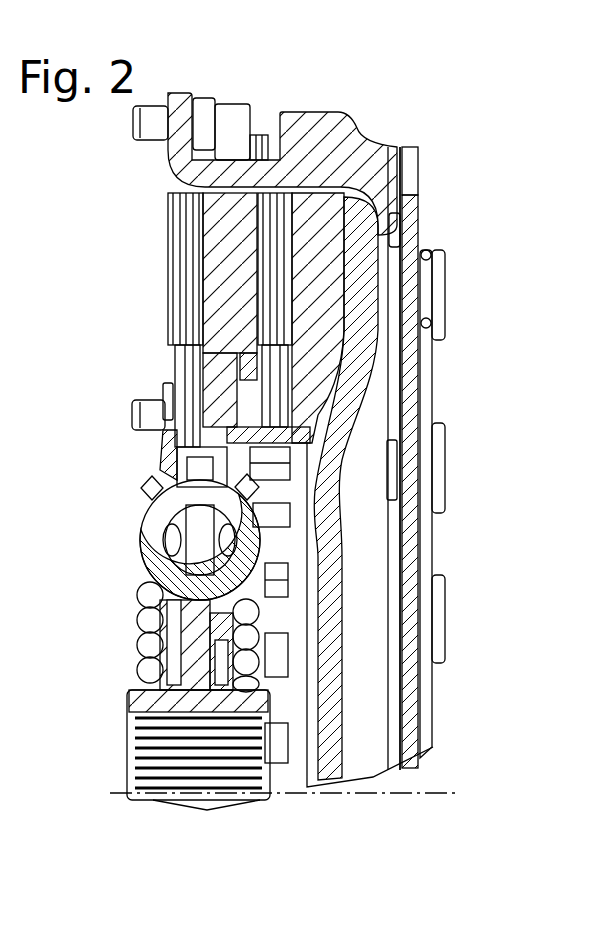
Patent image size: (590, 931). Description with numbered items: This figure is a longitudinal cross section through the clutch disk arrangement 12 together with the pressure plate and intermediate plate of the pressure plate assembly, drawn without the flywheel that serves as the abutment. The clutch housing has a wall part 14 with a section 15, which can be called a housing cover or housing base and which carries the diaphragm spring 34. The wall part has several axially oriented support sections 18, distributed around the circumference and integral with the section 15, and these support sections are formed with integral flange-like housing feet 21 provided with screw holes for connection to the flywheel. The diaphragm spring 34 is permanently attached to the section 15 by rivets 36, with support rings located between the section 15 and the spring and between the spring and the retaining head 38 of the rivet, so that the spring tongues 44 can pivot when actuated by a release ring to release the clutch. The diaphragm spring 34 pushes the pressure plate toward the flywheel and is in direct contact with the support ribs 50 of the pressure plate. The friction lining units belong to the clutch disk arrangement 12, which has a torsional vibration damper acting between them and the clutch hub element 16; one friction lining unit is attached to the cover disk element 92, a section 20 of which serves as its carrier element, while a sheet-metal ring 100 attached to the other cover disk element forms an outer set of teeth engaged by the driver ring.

The clutch disk arrangement 12 is at (143, 295).
The wall part 14 is at (323, 183).
The section 15 is at (380, 227).
The clutch hub element 16 is at (131, 690).
The support section 18 is at (294, 135).
The section of the cover plate 20 is at (167, 453).
The housing foot 21 is at (183, 138).
The diaphragm spring 34 is at (410, 350).
The rivet 36 is at (428, 283).
The retaining head 38 is at (445, 305).
The spring tongue 44 is at (423, 510).
The support rib 50 is at (390, 163).
The cover disk element 92 is at (150, 485).
The sheet-metal ring 100 is at (283, 615).